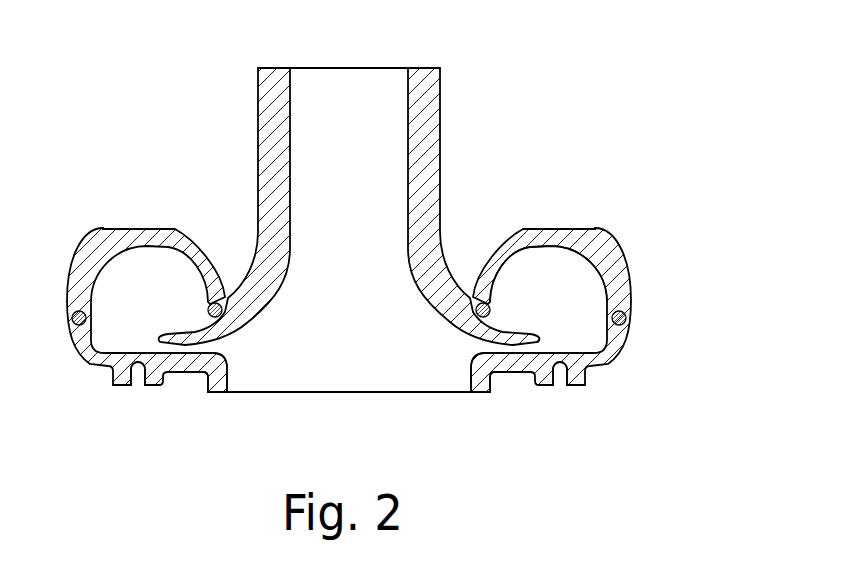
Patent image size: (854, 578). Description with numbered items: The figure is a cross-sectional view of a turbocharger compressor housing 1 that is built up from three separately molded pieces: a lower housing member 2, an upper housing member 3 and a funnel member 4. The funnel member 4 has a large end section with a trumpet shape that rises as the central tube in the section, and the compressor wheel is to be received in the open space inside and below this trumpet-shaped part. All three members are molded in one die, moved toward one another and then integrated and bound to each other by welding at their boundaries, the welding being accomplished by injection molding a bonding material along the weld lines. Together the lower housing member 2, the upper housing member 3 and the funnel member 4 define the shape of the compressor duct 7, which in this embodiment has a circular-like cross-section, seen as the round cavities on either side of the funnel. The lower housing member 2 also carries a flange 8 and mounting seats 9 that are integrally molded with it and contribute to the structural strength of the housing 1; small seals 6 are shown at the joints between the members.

The housing 1 is at (402, 260).
The lower housing member 2 is at (617, 353).
The upper housing member 3 is at (617, 258).
The funnel member 4 is at (430, 122).
The O-ring seal 6 is at (492, 303).
The compressor duct 7 is at (552, 305).
The flange 8 is at (220, 392).
The mounting seats 9 is at (143, 385).